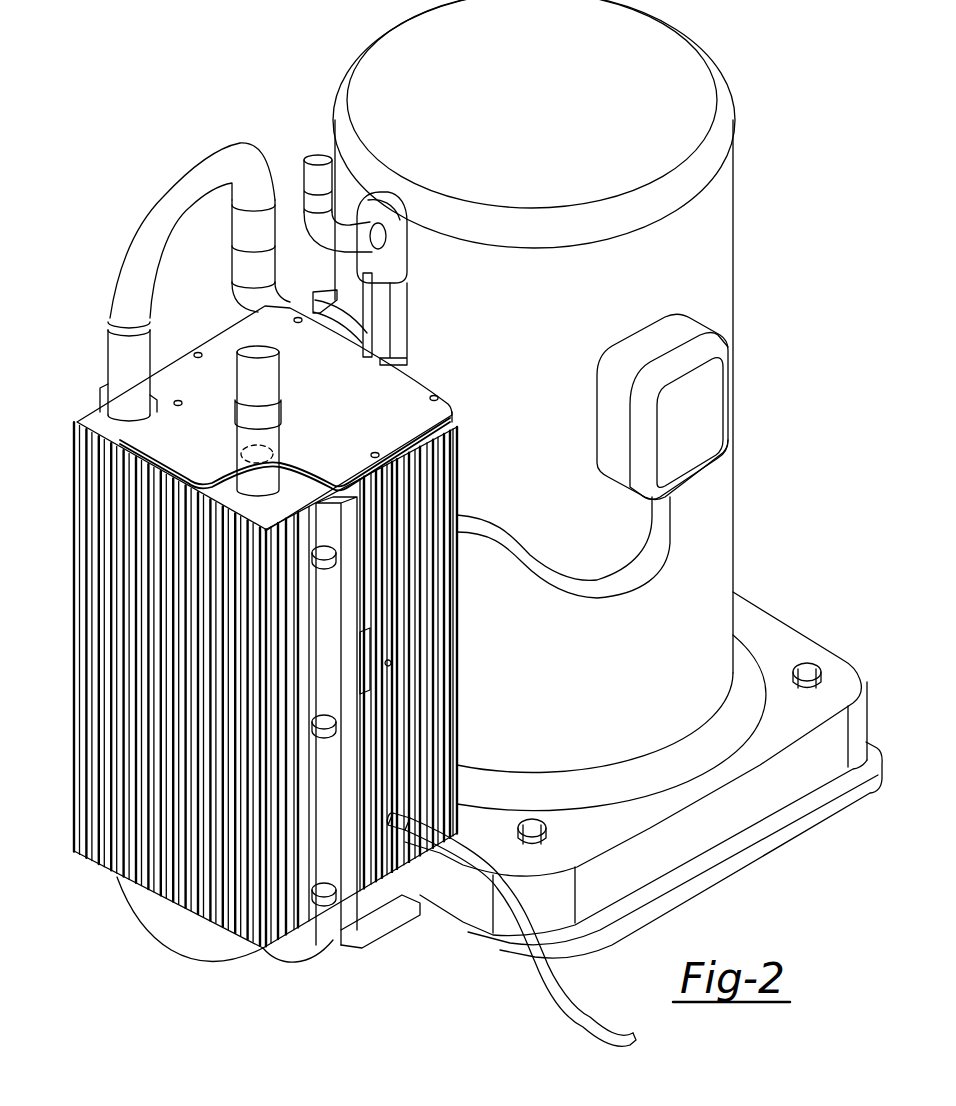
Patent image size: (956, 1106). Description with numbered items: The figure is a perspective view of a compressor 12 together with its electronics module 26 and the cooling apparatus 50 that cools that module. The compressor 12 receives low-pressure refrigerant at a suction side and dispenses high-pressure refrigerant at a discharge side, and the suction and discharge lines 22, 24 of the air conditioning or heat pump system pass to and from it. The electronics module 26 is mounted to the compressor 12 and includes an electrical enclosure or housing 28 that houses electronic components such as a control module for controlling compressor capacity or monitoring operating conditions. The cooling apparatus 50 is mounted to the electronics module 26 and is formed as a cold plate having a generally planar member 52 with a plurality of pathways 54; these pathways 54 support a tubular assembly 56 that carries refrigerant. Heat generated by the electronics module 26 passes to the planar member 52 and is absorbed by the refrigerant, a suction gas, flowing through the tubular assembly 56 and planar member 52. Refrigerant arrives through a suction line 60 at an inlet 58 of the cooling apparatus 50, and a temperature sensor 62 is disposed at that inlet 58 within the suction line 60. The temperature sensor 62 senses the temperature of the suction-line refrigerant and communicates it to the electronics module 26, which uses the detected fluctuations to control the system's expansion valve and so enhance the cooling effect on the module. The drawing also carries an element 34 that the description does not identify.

The compressor 12 is at (733, 275).
The suction line 22 is at (147, 237).
The discharge line 24 is at (308, 243).
The electronics module 26 is at (388, 887).
The electrical enclosure or housing 28 is at (440, 687).
The tube fitting 34 is at (100, 410).
The cooling apparatus 50 is at (275, 648).
The planar member 52 is at (78, 432).
The pathways 54 is at (287, 498).
The tubular assembly 56 is at (157, 935).
The inlet 58 is at (283, 366).
The suction line 60 is at (265, 440).
The temperature sensor 62 is at (240, 452).